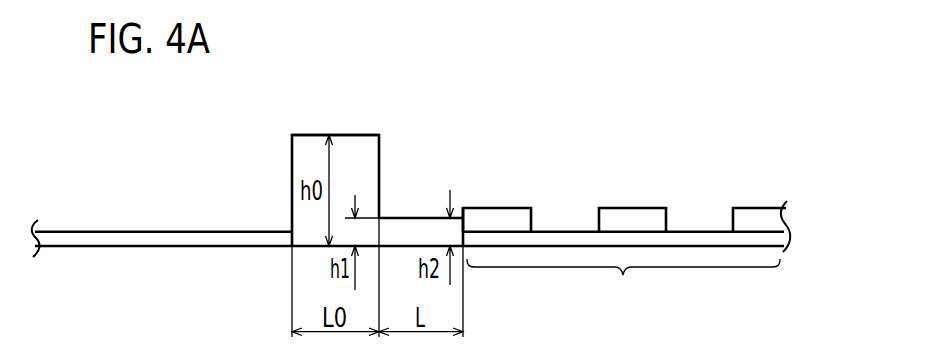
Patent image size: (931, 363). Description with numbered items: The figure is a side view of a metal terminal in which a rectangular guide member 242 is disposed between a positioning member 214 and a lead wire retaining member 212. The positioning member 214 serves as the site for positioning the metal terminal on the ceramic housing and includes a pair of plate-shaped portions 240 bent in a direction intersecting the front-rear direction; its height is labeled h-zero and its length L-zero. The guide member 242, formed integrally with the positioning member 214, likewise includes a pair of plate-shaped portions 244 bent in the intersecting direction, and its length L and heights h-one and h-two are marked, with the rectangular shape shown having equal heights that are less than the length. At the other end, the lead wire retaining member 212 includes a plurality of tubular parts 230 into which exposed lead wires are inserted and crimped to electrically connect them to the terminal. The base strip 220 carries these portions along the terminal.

The lead wire retaining member 212 is at (623, 283).
The positioning member 214 is at (311, 134).
The substrate 220 is at (80, 232).
The tubular parts 230 is at (623, 218).
The plate-shaped portions 240 is at (292, 163).
The guide member 242 is at (439, 189).
The plate-shaped portions 244 is at (407, 232).